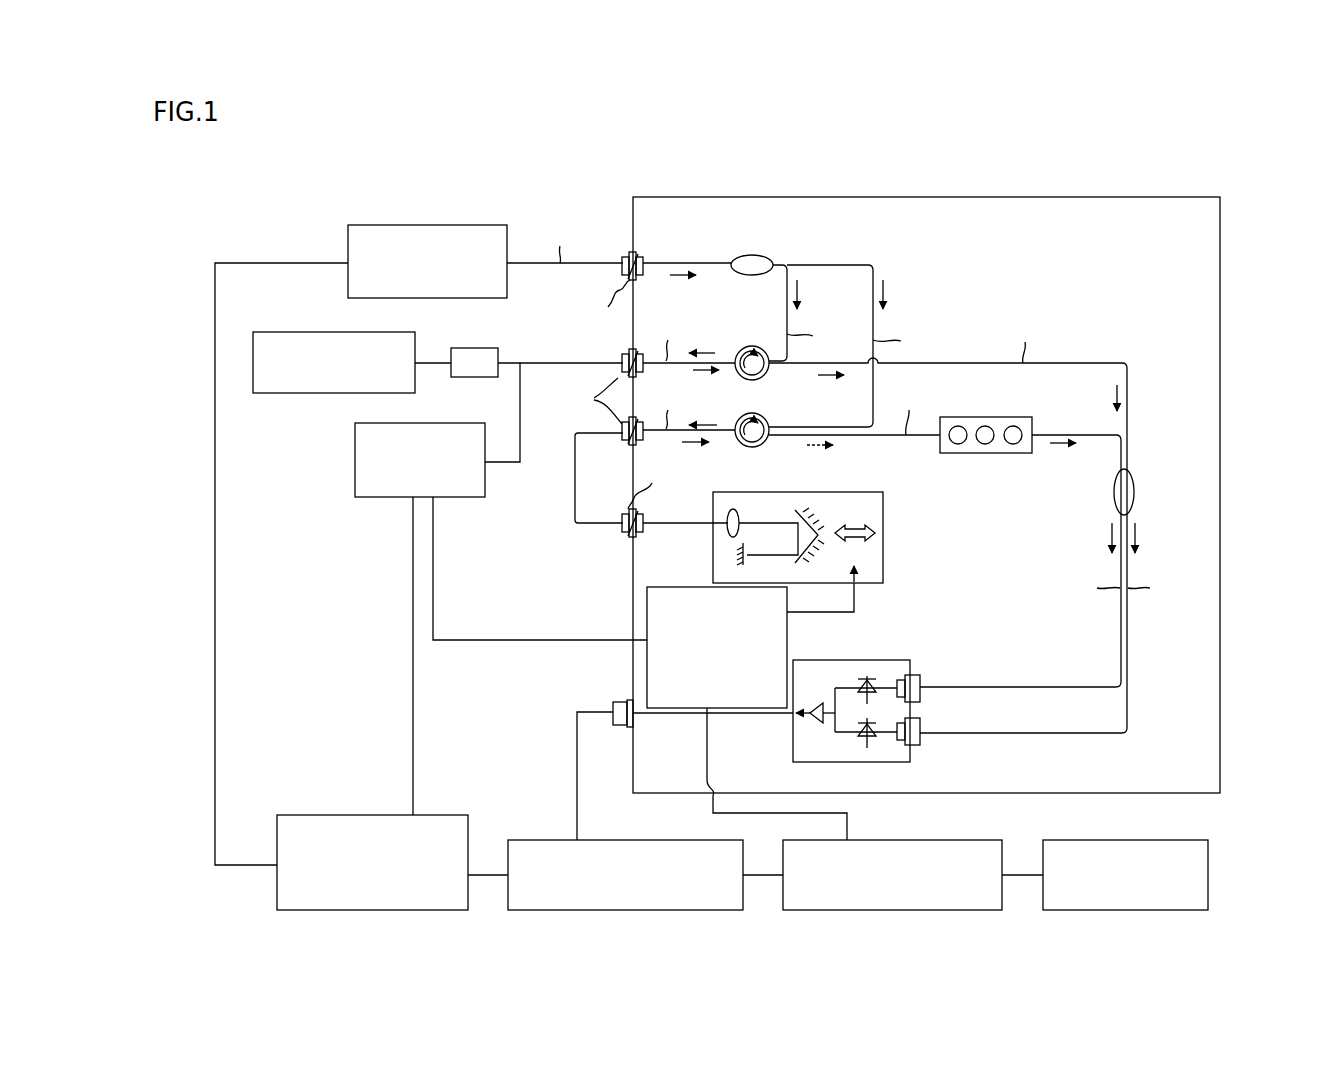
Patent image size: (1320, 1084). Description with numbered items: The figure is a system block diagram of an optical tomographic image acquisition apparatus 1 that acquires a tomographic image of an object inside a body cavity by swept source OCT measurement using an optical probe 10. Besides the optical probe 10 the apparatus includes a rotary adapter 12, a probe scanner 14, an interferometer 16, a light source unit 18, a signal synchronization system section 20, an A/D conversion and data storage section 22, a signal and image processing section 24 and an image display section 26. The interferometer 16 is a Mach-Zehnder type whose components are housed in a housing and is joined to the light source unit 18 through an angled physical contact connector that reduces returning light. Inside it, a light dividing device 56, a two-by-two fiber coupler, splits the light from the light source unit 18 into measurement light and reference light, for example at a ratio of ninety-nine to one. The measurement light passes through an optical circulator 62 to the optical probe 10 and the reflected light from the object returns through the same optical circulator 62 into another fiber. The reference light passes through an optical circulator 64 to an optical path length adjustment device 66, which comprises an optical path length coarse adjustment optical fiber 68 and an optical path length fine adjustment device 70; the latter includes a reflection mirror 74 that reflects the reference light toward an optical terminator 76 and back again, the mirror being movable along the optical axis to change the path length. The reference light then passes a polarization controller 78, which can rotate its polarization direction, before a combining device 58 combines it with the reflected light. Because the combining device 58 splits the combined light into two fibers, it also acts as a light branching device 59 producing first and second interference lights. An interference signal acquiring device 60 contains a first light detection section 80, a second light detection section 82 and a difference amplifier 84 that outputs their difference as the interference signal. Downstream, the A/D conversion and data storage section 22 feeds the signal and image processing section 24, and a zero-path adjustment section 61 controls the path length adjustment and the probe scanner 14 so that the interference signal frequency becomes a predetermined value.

The optical tomographic image acquisition apparatus 1 is at (836, 166).
The optical probe 10 is at (280, 332).
The rotary adapter 12 is at (484, 348).
The probe scanner 14 is at (355, 463).
The interferometer 16 is at (1058, 197).
The light source unit 18 is at (432, 225).
The signal synchronization system section 20 is at (348, 815).
The A/D conversion and data storage section 22 is at (626, 840).
The signal and image processing section 24 is at (888, 840).
The image display section 26 is at (1208, 872).
The light dividing device 56 is at (762, 256).
The combining device 58 is at (1067, 492).
The light branching device 59 is at (1114, 493).
The interference signal acquiring device 60 is at (853, 707).
The zero-path adjustment section 61 is at (647, 670).
The optical circulator 62 is at (753, 346).
The optical circulator 64 is at (764, 414).
The optical path length adjustment device 66 is at (700, 522).
The optical path length coarse adjustment optical fiber 68 is at (575, 484).
The optical path length fine adjustment device 70 is at (622, 538).
The reflection mirror 74 is at (798, 520).
The optical terminator 76 is at (745, 545).
The polarization controller 78 is at (970, 417).
The first light detection section 80 is at (873, 678).
The second light detection section 82 is at (860, 746).
The difference amplifier 84 is at (794, 720).